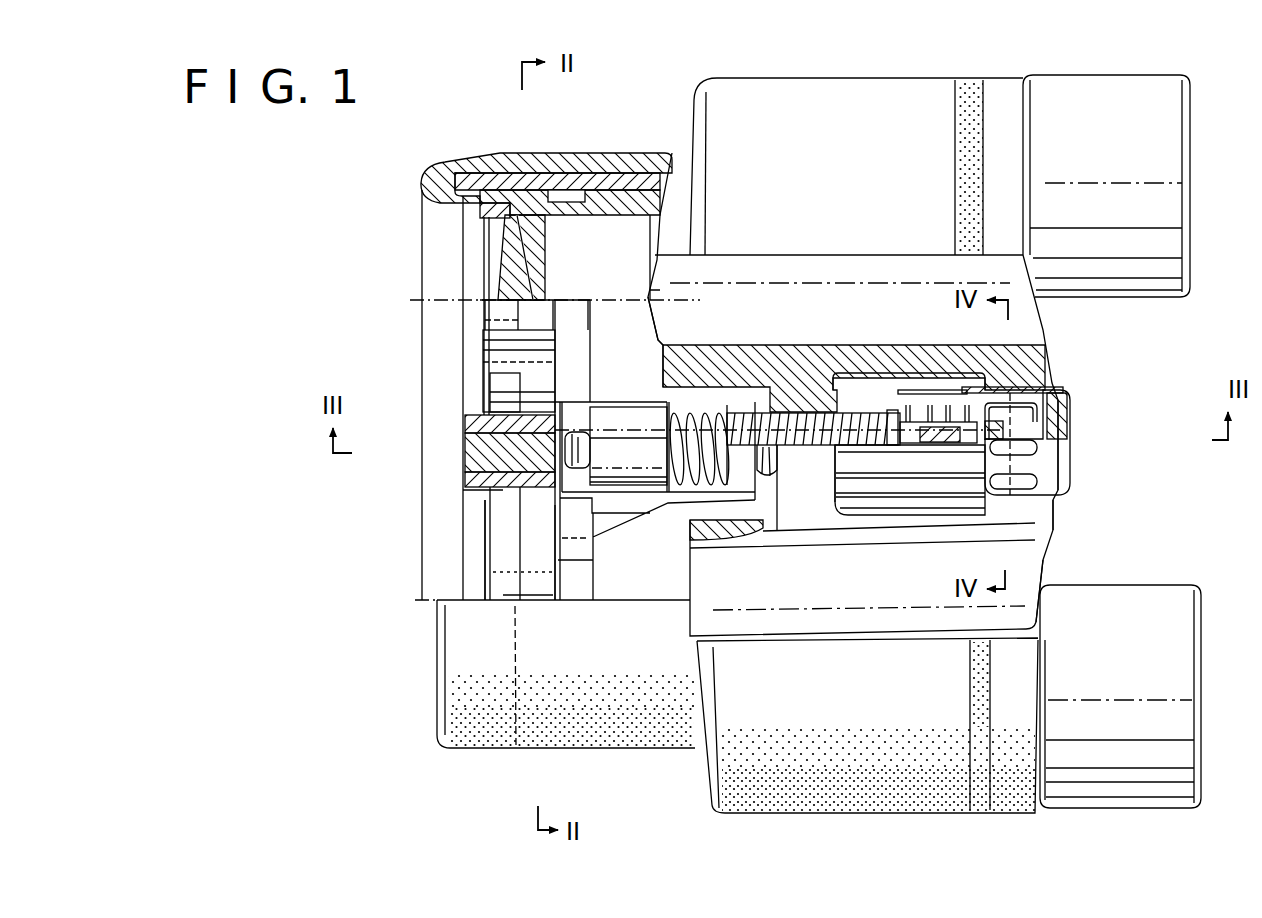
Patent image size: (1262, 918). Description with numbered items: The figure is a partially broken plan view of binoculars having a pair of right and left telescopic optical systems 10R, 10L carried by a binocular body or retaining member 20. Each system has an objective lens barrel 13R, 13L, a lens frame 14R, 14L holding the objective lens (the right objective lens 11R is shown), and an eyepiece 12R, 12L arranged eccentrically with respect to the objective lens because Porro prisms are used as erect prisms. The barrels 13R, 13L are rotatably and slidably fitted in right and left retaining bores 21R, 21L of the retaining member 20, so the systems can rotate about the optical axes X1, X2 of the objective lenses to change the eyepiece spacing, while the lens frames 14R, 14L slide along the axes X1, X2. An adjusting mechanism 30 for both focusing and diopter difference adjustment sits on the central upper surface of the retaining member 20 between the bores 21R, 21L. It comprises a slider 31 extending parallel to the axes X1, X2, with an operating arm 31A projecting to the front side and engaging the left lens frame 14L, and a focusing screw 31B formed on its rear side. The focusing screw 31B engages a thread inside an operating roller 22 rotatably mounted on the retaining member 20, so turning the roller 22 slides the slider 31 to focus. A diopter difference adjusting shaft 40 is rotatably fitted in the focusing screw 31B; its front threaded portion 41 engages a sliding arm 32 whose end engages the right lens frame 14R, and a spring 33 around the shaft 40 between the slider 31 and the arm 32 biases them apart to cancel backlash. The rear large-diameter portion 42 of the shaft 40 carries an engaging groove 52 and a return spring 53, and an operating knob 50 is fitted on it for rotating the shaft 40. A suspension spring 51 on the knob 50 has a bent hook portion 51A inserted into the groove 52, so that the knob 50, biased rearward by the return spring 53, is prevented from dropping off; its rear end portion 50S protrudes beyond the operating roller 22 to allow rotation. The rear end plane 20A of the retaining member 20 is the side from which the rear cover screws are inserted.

The right telescopic optical system 10R is at (641, 135).
The left telescopic optical system 10L is at (690, 750).
The right eyepiece 12R is at (1170, 88).
The left eyepiece 12L is at (1180, 780).
The right objective lens barrel 13R is at (488, 152).
The left objective lens barrel 13L is at (463, 480).
The right lens frame 14R is at (556, 152).
The left lens frame 14L is at (495, 563).
The right objective lens 11R is at (500, 257).
The right retaining bore 21R is at (478, 205).
The left retaining bore 21L is at (470, 505).
The retaining member 20 is at (1036, 330).
The rear end plane 20A is at (1055, 548).
The operating roller 22 is at (870, 527).
The adjusting mechanism 30 is at (1112, 457).
The slider 31 is at (672, 520).
The operating arm 31A is at (563, 520).
The focusing screw 31B is at (778, 535).
The sliding arm 32 is at (485, 350).
The spring 33 is at (678, 380).
The diopter difference adjusting shaft 40 is at (742, 416).
The threaded portion 41 is at (578, 432).
The large-diameter portion 42 is at (920, 400).
The operating knob 50 is at (1068, 460).
The rear end portion 50S is at (1072, 504).
The suspension spring 51 is at (1000, 383).
The hook portion 51A is at (1050, 479).
The engaging groove 52 is at (960, 498).
The return spring 53 is at (955, 395).
The optical axis X1 is at (412, 300).
The optical axis X2 is at (421, 600).